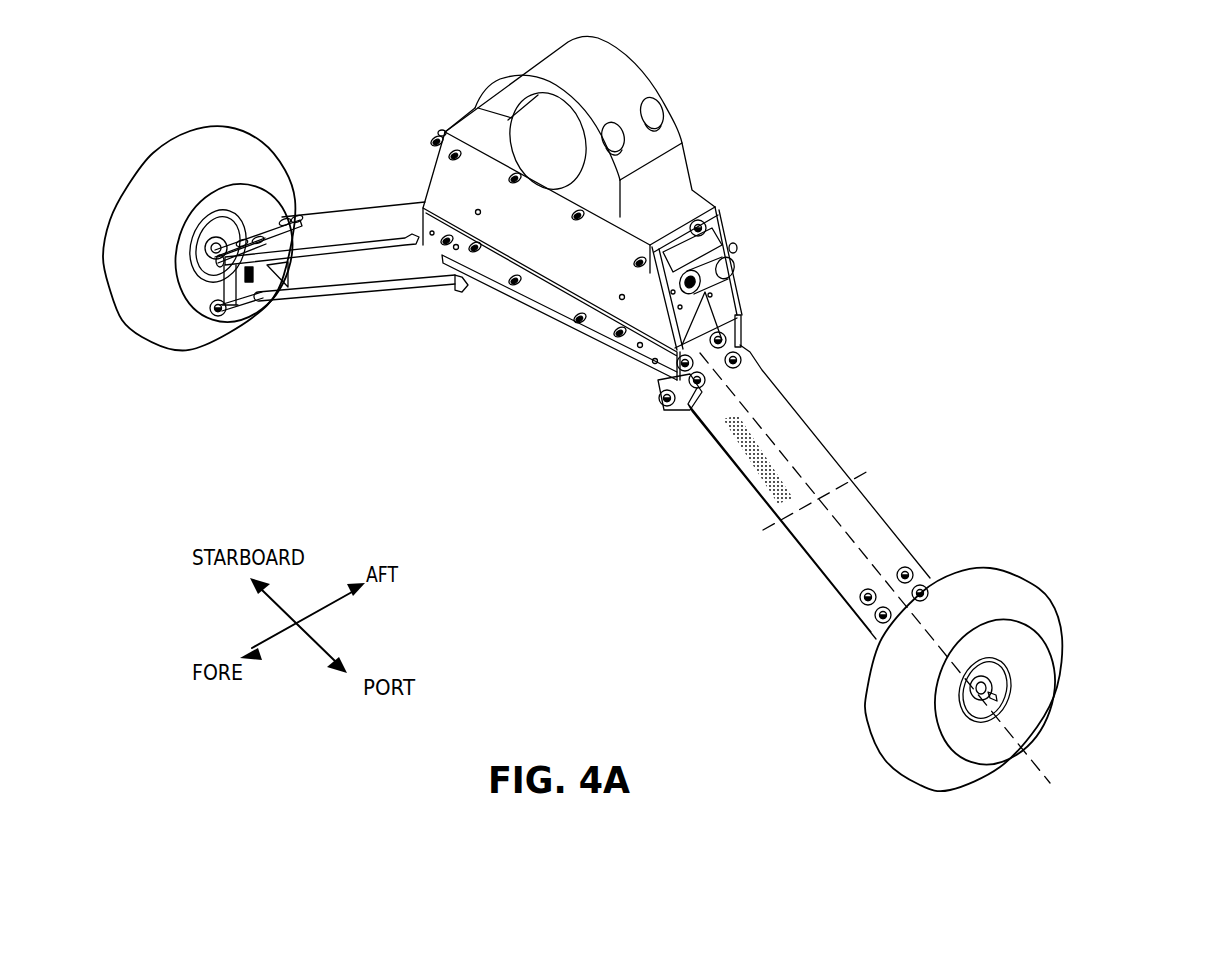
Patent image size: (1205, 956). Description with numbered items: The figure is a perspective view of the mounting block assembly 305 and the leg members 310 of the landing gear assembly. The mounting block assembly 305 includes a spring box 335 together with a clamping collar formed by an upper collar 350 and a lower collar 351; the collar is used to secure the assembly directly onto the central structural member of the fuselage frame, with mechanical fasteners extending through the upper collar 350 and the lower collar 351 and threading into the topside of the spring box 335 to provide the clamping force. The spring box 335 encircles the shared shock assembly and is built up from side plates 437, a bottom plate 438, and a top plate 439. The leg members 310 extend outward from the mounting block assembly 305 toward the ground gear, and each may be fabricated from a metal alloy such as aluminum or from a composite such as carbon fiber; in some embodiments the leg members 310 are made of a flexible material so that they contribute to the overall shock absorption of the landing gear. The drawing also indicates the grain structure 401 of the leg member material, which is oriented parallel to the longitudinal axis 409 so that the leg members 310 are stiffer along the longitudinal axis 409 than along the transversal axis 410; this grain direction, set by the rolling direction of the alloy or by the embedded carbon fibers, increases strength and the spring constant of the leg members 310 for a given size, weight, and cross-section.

The mounting block assembly 305 is at (651, 235).
The upper collar 350 is at (621, 93).
The lower collar 351 is at (665, 196).
The side plates 437 is at (440, 182).
The top plate 439 is at (692, 200).
The bottom plate 438 is at (560, 317).
The spring box 335 is at (474, 364).
The leg members 310 is at (789, 464).
The grain structure 401 is at (734, 453).
The transversal axis 410 is at (881, 477).
The longitudinal axis 409 is at (916, 598).